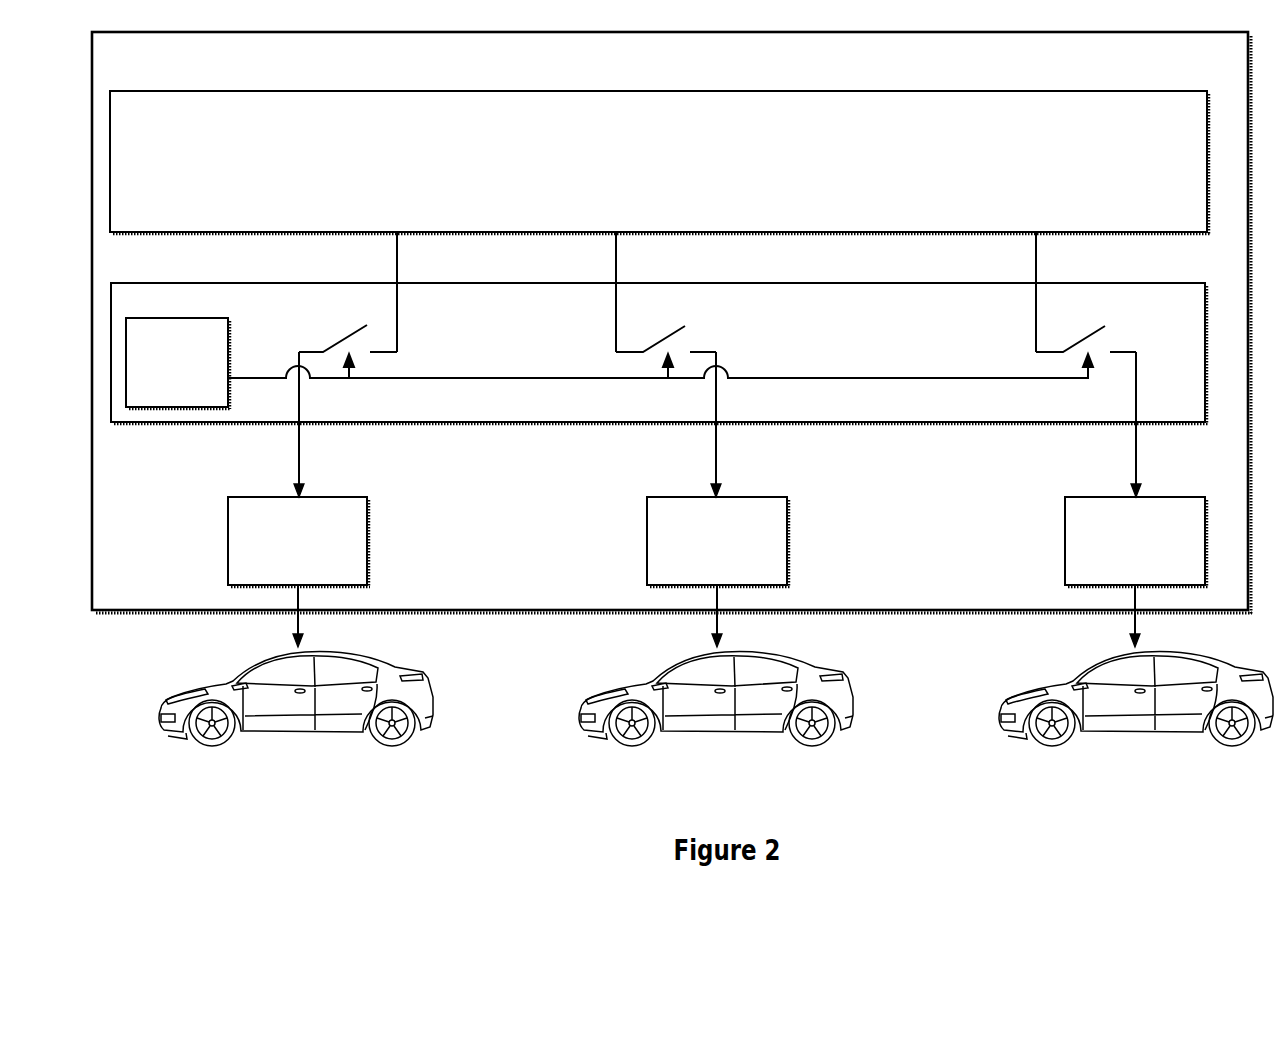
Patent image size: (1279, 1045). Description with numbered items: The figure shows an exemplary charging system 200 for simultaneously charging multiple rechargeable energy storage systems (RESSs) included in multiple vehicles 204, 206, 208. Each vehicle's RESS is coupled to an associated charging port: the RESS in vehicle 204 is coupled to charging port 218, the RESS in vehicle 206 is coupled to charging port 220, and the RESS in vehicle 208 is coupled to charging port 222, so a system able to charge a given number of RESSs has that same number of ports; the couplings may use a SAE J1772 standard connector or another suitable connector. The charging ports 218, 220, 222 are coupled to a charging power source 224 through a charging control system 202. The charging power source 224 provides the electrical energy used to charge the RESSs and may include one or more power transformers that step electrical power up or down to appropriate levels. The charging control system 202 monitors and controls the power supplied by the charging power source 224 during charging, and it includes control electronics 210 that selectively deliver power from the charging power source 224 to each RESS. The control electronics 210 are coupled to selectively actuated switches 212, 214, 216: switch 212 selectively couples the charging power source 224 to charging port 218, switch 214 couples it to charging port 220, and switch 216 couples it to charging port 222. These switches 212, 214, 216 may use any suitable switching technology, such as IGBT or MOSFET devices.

The charging system 200 is at (672, 323).
The charging control system 202 is at (659, 353).
The vehicle 204 is at (318, 732).
The vehicle 206 is at (738, 732).
The vehicle 208 is at (1156, 732).
The control electronics 210 is at (178, 363).
The switch 212 is at (323, 312).
The switch 214 is at (672, 312).
The switch 216 is at (1094, 310).
The charging port 218 is at (299, 572).
The charging port 220 is at (718, 572).
The charging port 222 is at (1136, 572).
The charging power source 224 is at (660, 162).